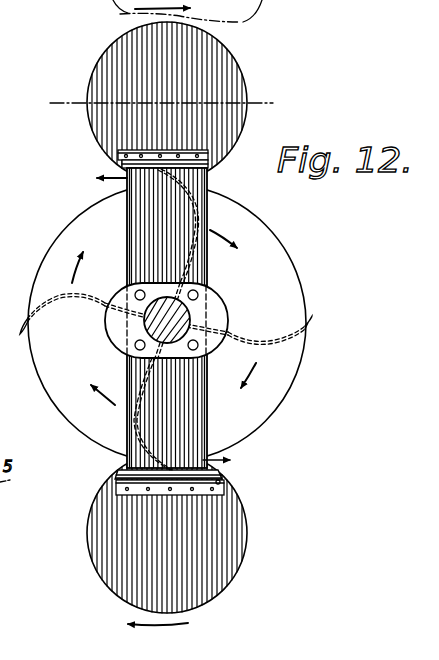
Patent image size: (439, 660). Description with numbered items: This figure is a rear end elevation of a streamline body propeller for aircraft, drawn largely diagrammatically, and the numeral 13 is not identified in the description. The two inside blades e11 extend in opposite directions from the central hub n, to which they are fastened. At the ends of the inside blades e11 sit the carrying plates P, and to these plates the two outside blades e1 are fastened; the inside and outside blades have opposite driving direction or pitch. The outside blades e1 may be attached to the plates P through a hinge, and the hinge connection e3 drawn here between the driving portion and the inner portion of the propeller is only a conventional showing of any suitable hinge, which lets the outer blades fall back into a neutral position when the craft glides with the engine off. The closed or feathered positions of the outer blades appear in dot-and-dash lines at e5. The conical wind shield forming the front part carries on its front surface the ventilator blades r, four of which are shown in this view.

The outside propeller blade e1 is at (236, 73).
The drum axis 13 is at (40, 143).
The hinge connection e3 is at (120, 151).
The carrying plate P is at (213, 168).
The feathered position of outer blade e5 is at (115, 490).
The inside propeller blade e11 is at (207, 270).
The central hub n is at (228, 308).
The ventilator blade r is at (316, 322).